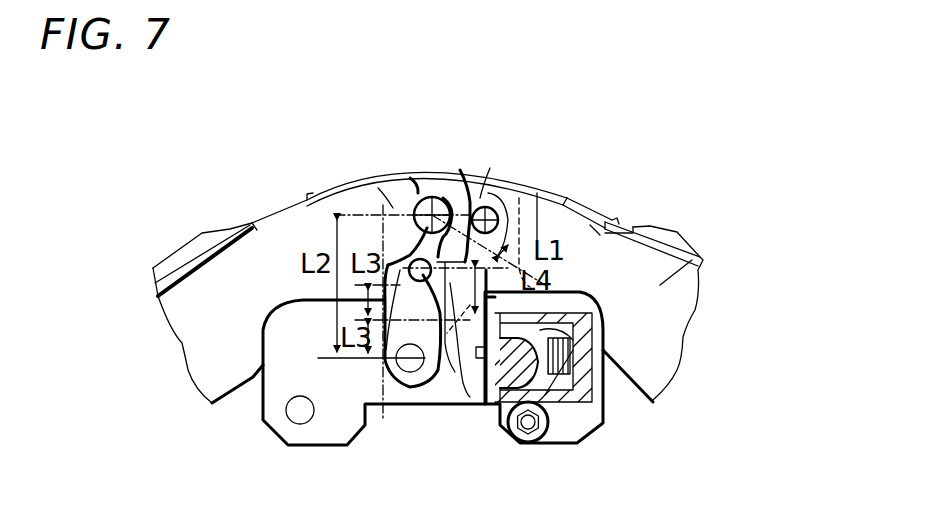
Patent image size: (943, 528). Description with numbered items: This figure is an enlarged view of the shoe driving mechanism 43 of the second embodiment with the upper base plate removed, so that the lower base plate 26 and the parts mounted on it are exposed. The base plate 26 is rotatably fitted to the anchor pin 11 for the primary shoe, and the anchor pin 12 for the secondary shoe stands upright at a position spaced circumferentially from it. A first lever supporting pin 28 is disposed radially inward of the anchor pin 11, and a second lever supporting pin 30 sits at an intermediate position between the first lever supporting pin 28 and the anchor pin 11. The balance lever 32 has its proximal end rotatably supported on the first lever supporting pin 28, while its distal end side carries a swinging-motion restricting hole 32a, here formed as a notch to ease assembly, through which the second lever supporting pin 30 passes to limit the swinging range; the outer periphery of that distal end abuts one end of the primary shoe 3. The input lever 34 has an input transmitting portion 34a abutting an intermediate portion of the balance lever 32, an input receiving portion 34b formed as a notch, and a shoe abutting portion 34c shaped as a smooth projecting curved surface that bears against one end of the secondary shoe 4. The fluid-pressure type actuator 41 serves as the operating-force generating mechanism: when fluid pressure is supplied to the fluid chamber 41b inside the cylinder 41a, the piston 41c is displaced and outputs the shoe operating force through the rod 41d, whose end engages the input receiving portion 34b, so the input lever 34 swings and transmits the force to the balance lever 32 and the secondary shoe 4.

The primary shoe 3 is at (203, 275).
The secondary shoe 4 is at (697, 255).
The anchor pin for the primary shoe 11 is at (450, 195).
The anchor pin for the secondary shoe 12 is at (482, 178).
The lower base plate 26 is at (380, 188).
The first lever supporting pin 28 is at (410, 360).
The second lever supporting pin 30 is at (423, 262).
The balance lever 32 is at (352, 403).
The swinging-motion restricting hole 32a is at (400, 362).
The input lever 34 is at (470, 400).
The input transmitting portion 34a is at (453, 400).
The input receiving portion 34b is at (480, 400).
The shoe abutting portion 34c is at (470, 198).
The fluid-pressure type actuator 41 is at (595, 415).
The cylinder 41a is at (583, 348).
The fluid chamber 41b is at (560, 332).
The piston 41c is at (540, 320).
The rod 41d is at (540, 403).
The shoe driving mechanism 43 is at (416, 180).